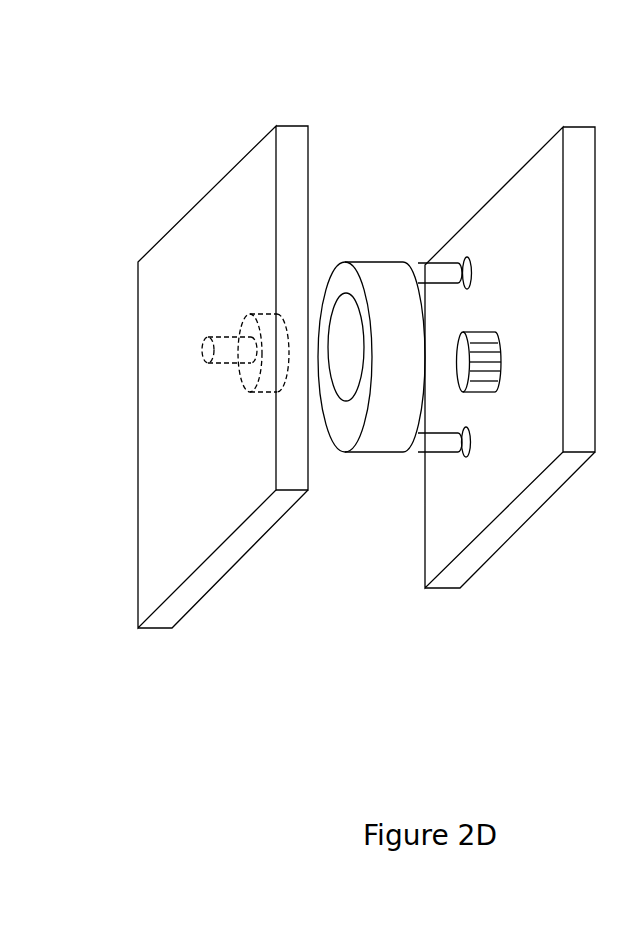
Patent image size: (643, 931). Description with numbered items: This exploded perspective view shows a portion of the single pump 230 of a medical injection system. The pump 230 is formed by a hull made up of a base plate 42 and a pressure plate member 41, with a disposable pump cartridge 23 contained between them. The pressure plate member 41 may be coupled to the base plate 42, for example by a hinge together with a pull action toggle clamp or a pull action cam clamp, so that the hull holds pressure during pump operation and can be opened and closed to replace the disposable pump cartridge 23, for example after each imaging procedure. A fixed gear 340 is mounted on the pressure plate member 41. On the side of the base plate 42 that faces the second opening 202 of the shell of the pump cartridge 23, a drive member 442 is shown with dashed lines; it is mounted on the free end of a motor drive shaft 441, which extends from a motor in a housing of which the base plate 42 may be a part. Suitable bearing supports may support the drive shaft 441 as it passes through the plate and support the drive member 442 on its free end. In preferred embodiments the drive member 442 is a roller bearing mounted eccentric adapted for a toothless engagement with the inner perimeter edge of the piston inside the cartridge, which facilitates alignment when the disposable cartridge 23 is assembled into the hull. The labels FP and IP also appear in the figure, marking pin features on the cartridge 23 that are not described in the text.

The pump 230 is at (153, 85).
The second opening 202 is at (342, 335).
The disposable pump cartridge 23 is at (387, 205).
The base plate 42 is at (259, 236).
The pressure plate member 41 is at (535, 236).
The motor drive shaft 441 is at (228, 335).
The drive member 442 is at (268, 366).
The fixed gear 340 is at (487, 387).
The fixed pin FP is at (430, 263).
The insertion pin IP is at (445, 447).